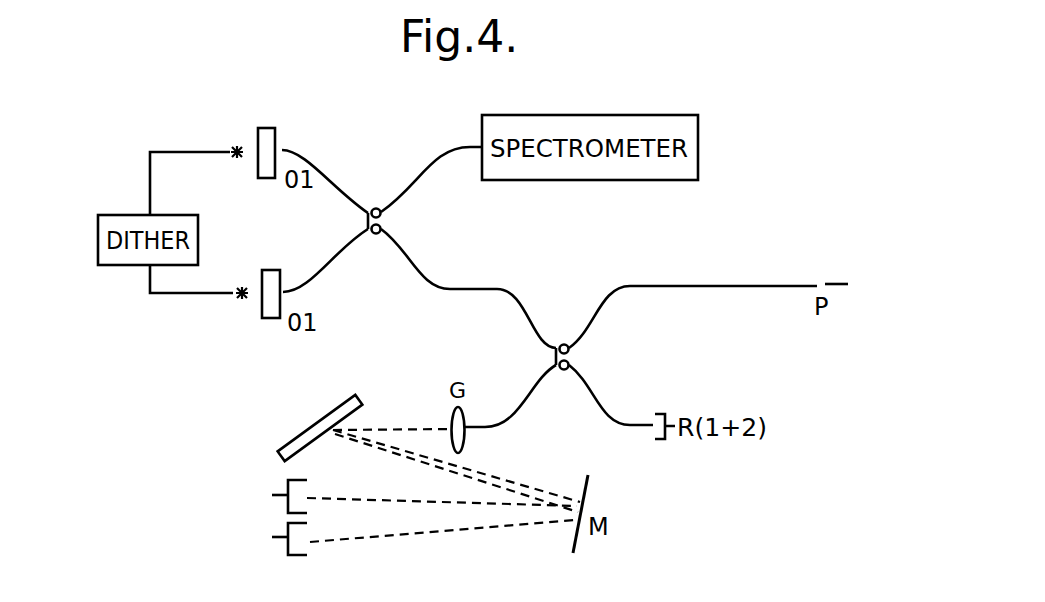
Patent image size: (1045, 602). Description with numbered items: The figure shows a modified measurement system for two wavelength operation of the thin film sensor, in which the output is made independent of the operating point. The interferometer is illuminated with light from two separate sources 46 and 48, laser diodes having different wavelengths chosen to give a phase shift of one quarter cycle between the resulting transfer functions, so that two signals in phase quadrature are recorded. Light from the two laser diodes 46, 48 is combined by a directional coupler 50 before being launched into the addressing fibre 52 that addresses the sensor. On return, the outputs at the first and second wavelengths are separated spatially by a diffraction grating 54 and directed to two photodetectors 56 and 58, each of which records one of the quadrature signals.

The separate source 46 is at (236, 149).
The separate source 48 is at (243, 291).
The directional coupler 50 is at (377, 211).
The addressing fibre 52 is at (432, 268).
The diffraction grating 54 is at (336, 402).
The photodetector 56 is at (272, 495).
The photodetector 58 is at (272, 537).